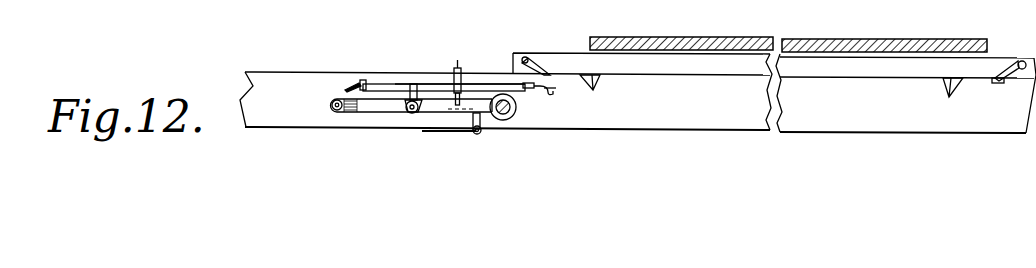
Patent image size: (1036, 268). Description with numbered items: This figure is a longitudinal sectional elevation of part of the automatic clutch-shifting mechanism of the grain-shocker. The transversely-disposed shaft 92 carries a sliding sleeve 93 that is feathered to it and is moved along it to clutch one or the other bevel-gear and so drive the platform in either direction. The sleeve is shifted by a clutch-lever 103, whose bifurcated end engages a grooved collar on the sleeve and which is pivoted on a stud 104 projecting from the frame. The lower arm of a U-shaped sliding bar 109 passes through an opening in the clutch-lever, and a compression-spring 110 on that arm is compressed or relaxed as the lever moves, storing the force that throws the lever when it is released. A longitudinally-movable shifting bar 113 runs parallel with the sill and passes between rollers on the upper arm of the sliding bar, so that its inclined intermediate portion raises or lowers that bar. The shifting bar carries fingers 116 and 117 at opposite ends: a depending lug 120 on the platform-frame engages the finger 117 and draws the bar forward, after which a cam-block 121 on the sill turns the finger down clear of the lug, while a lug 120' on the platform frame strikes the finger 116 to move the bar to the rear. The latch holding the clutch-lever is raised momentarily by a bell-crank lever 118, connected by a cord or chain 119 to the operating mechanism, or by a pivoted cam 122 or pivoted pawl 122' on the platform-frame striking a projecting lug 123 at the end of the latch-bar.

The transversely-disposed shaft 92 is at (514, 115).
The sliding sleeve 93 is at (518, 106).
The clutch-lever 103 is at (368, 106).
The stud 104 is at (332, 111).
The U-shaped sliding bar 109 is at (414, 113).
The compression-spring 110 is at (409, 113).
The shifting bar 113 is at (390, 86).
The finger 116 is at (366, 81).
The finger 117 is at (553, 98).
The bell-crank lever 118 is at (480, 134).
The cord or chain 119 is at (467, 132).
The depending lug 120 is at (597, 92).
The lug 120' is at (940, 100).
The cam-block 121 is at (555, 88).
The pivoted cam 122 is at (641, 48).
The pivoted pawl 122' is at (999, 93).
The lug 123 is at (457, 68).